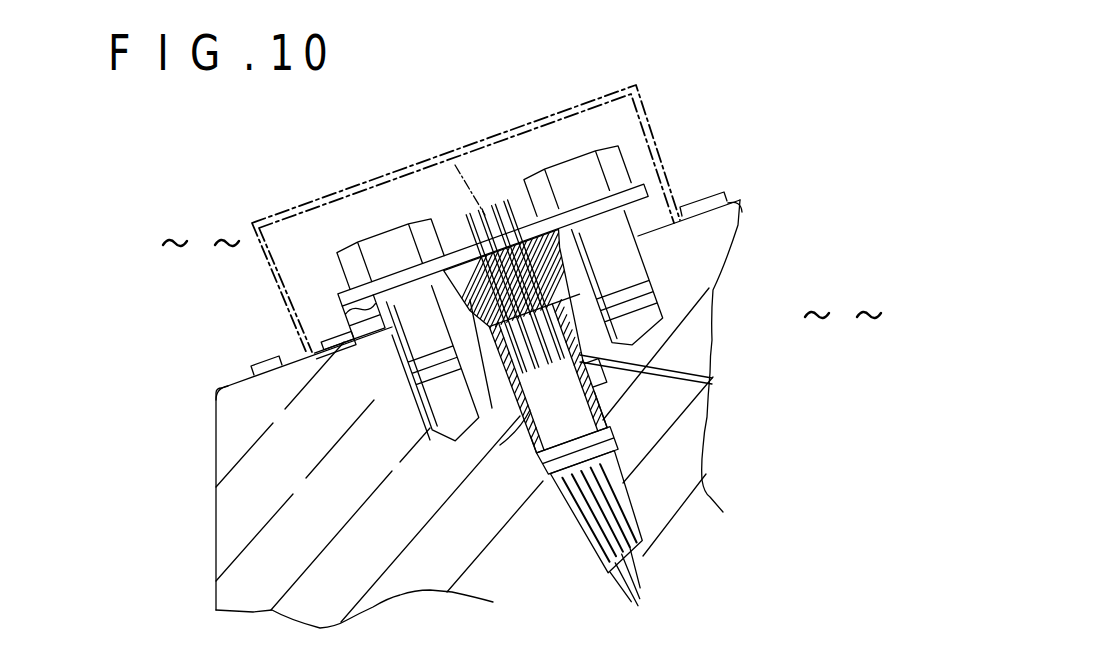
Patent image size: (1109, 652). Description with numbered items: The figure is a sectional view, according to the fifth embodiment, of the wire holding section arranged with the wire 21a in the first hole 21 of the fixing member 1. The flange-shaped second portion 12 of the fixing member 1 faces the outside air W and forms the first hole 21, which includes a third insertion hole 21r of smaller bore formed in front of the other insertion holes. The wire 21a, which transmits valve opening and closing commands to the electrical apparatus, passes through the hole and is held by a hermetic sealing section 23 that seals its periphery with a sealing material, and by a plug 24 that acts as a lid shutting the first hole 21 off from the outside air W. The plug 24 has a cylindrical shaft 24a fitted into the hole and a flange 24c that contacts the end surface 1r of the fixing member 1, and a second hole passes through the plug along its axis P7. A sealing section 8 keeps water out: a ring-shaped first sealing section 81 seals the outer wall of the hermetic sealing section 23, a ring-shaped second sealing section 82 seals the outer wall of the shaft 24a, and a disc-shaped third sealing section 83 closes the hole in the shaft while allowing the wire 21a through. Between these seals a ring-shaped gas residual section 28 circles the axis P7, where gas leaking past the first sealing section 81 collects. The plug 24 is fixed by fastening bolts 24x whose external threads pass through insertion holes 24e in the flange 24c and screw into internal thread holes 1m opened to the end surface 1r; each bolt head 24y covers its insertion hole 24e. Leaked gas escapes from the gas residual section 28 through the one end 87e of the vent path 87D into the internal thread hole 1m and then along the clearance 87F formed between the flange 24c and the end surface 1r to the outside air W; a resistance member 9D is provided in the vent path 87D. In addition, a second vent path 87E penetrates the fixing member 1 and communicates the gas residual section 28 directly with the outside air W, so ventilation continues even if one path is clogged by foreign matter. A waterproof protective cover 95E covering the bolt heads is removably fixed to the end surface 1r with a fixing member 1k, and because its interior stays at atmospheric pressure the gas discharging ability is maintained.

The fixing member 1 is at (378, 536).
The fixing member 1k is at (252, 360).
The internal thread hole 1m is at (440, 405).
The end surface 1r is at (223, 384).
The second portion 12 is at (352, 490).
The first hole 21 is at (587, 340).
The wire 21a is at (467, 230).
The third insertion hole 21r is at (640, 517).
The hermetic sealing section 23 is at (605, 432).
The plug 24 is at (635, 245).
The cylindrical shaft 24a is at (398, 360).
The flange 24c is at (342, 356).
The insertion hole 24e is at (343, 290).
The fastening bolt 24x is at (375, 224).
The bolt head 24y is at (337, 247).
The gas residual section 28 is at (590, 367).
The sealing section 8 is at (699, 410).
The first sealing section 81 is at (600, 412).
The second sealing section 82 is at (595, 270).
The third sealing section 83 is at (517, 227).
The vent path 87D is at (482, 467).
The second vent path 87E is at (684, 368).
The clearance 87F is at (340, 345).
The one end 87e is at (510, 430).
The resistance member 9D is at (465, 432).
The waterproof protective cover 95E is at (510, 132).
The axis P7 is at (476, 192).
The outside air W is at (522, 281).